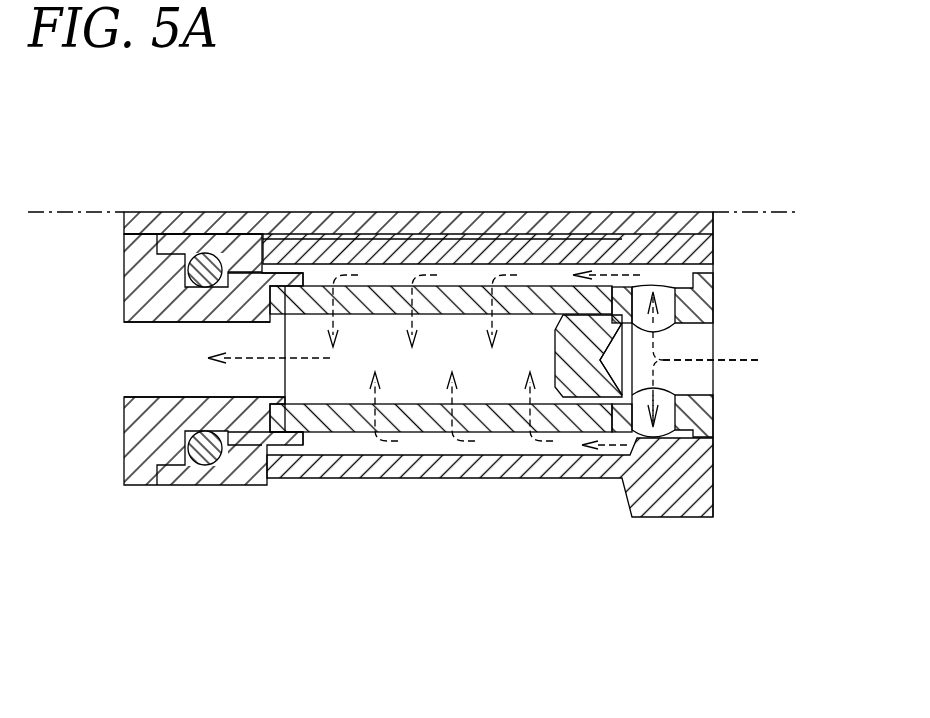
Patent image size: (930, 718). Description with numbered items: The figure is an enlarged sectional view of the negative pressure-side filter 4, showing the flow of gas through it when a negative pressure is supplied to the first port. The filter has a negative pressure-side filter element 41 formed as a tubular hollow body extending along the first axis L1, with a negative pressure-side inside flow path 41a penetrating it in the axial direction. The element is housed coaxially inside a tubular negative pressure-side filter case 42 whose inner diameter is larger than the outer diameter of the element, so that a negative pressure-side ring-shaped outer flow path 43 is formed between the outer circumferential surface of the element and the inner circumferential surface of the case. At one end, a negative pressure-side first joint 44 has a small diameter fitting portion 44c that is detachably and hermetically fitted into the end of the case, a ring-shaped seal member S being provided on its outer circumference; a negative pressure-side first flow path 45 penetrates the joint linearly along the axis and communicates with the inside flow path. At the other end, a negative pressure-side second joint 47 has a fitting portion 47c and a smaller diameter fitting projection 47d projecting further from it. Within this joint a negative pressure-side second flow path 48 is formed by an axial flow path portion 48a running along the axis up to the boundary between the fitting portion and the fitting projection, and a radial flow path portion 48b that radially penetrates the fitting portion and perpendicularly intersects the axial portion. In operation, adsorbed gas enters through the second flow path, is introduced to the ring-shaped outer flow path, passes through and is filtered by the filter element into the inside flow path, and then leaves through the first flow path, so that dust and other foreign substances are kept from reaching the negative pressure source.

The negative pressure-side filter 4 is at (427, 500).
The negative pressure-side filter element 41 is at (343, 430).
The negative pressure-side inside flow path 41a is at (474, 366).
The negative pressure-side filter case 42 is at (650, 252).
The negative pressure-side ring-shaped outer flow path 43 is at (463, 280).
The negative pressure-side first joint 44 is at (127, 437).
The fitting portion 44c is at (243, 415).
The negative pressure-side first flow path 45 is at (148, 338).
The negative pressure-side second joint 47 is at (737, 325).
The fitting portion 47c is at (693, 297).
The fitting projection 47d is at (573, 323).
The negative pressure-side second flow path 48 is at (800, 370).
The axial flow path portion 48a is at (680, 380).
The radial flow path portion 48b is at (677, 418).
The seal member S is at (200, 456).
The first axis L1 is at (435, 219).